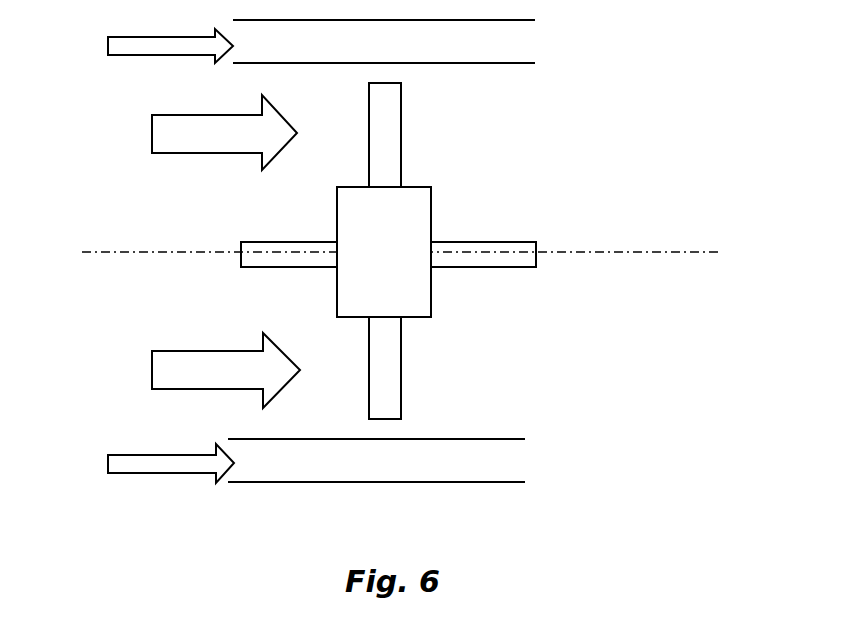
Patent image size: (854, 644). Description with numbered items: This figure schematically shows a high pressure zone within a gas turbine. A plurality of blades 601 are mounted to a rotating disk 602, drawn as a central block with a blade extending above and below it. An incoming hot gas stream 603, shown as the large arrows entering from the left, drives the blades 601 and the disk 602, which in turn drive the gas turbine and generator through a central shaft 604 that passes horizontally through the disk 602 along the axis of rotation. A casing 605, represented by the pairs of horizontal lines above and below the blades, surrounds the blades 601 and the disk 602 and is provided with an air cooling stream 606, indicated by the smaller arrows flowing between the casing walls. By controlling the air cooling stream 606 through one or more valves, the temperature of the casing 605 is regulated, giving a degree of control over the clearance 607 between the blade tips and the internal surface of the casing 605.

The blades 601 is at (403, 127).
The rotating disk 602 is at (431, 215).
The incoming hot gas stream 603 is at (152, 131).
The central shaft 604 is at (257, 242).
The casing 605 is at (498, 63).
The air cooling stream 606 is at (107, 46).
The clearance 607 is at (378, 75).